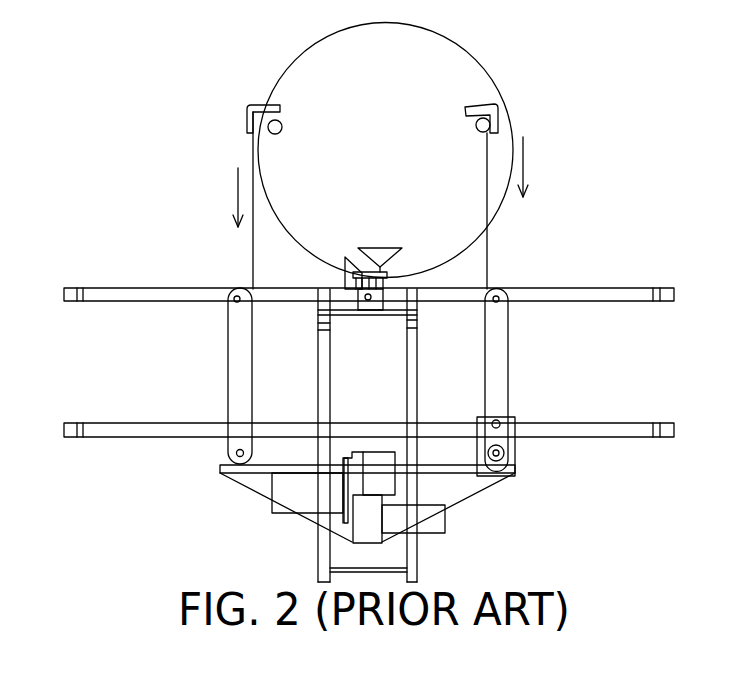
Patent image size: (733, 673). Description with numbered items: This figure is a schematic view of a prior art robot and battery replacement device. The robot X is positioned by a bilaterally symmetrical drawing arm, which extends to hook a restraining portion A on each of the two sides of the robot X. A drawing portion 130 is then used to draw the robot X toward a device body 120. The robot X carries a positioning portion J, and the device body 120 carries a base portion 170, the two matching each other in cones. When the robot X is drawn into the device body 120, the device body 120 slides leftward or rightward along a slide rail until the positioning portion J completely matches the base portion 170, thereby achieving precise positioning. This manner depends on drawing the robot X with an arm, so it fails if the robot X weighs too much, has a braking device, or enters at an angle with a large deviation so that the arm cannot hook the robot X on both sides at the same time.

The robot X is at (460, 82).
The restraining portion A is at (277, 121).
The positioning portion J is at (384, 250).
The base portion 170 is at (400, 268).
The drawing portion 130 is at (457, 490).
The device body 120 is at (340, 443).